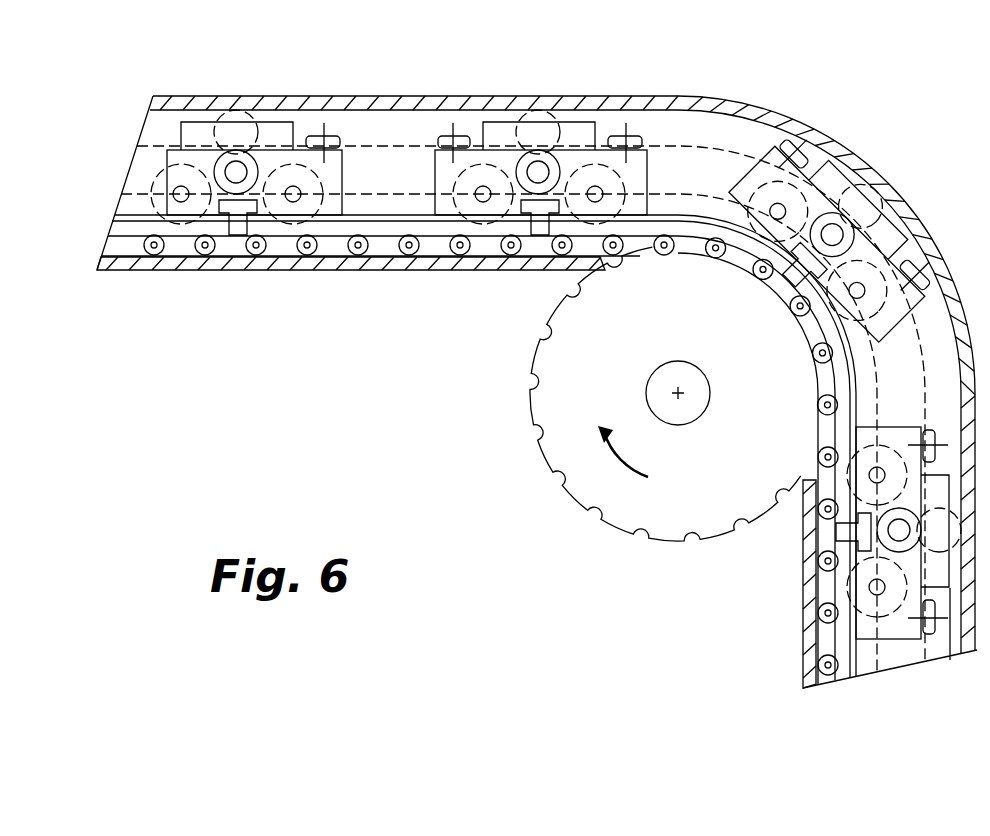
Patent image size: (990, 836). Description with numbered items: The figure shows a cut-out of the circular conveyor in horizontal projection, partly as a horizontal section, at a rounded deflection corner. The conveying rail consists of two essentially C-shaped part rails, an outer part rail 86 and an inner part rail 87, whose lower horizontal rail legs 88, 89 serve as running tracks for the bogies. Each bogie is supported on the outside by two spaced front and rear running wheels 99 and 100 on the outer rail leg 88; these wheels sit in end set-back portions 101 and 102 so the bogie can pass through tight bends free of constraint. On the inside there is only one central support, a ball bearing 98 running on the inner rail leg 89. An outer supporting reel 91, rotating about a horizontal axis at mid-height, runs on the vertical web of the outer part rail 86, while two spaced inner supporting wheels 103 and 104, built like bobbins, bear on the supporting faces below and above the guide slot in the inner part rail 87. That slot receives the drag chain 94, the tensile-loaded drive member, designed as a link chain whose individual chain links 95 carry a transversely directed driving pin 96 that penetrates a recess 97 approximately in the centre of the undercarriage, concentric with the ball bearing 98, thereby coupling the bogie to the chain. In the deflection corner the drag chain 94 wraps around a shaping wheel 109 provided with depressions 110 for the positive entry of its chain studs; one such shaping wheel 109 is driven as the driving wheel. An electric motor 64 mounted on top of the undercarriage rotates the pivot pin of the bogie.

The electric motor 64 is at (853, 240).
The outer part rail 86 is at (988, 652).
The inner part rail 87 is at (797, 647).
The outer rail leg 88 is at (942, 653).
The inner rail leg 89 is at (863, 663).
The outer supporting reel 91 is at (537, 113).
The drag chain 94 is at (374, 258).
The chain link 95 is at (233, 247).
The driving pin 96 is at (252, 231).
The recess 97 is at (198, 232).
The ball bearing 98 is at (500, 227).
The running wheel 99 is at (626, 135).
The running wheel 100 is at (452, 125).
The end set-back portion 101 is at (473, 130).
The end set-back portion 102 is at (603, 130).
The inner supporting wheel 103 is at (465, 218).
The inner supporting wheel 104 is at (593, 217).
The shaping wheel 109 is at (600, 473).
The depression 110 is at (643, 530).